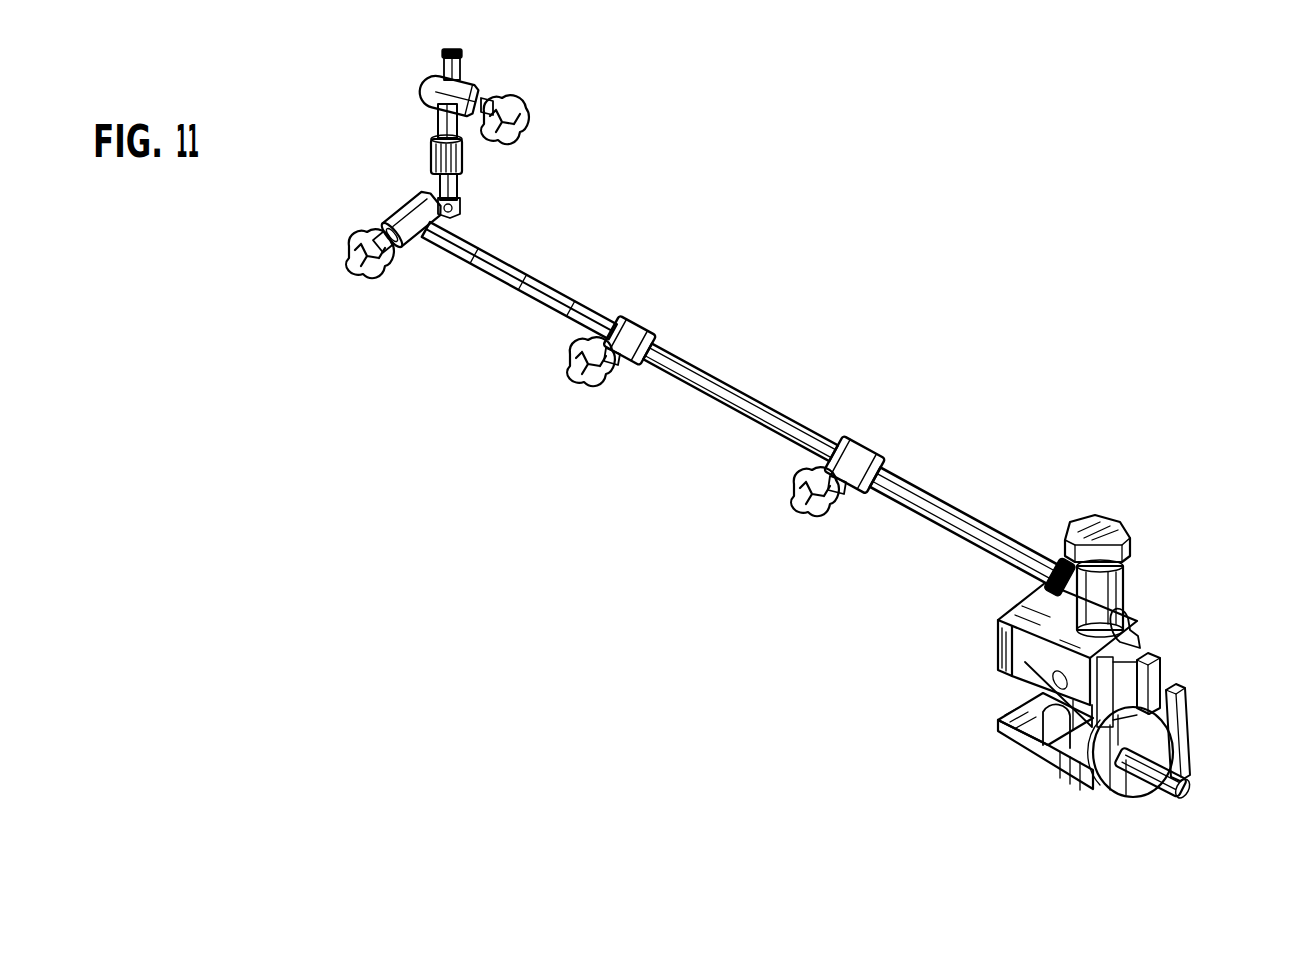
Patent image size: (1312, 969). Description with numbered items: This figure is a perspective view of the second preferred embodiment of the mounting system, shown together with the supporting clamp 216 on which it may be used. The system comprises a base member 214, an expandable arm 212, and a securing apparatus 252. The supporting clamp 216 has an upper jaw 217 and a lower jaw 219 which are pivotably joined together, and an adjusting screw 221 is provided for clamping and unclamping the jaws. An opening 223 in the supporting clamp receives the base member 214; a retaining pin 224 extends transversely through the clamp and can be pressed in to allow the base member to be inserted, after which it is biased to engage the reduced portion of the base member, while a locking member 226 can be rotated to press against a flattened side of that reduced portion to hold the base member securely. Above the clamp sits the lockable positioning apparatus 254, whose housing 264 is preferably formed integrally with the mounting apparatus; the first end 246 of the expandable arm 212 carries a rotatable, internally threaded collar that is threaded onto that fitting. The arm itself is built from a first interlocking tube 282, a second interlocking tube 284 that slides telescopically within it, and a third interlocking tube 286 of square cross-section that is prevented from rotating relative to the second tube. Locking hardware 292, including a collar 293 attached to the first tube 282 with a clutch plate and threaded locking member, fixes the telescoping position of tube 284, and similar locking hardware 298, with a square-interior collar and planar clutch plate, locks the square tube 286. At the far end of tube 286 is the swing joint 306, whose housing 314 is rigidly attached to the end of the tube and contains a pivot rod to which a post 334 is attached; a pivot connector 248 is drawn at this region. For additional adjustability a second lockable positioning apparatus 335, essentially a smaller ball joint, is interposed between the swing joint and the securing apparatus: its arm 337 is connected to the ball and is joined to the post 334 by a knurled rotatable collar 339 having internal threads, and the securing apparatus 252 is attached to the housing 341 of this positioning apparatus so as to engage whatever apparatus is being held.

The expandable arm 212 is at (848, 365).
The base member 214 is at (1180, 624).
The supporting clamp 216 is at (1085, 681).
The upper jaw 217 is at (1016, 644).
The lower jaw 219 is at (1064, 760).
The adjusting screw 221 is at (1152, 807).
The opening 223 is at (1027, 665).
The retaining pin 224 is at (1172, 677).
The locking member 226 is at (1228, 720).
The first end 246 is at (999, 581).
The pivot connector 248 is at (395, 263).
The securing apparatus 252 is at (497, 47).
The lockable positioning apparatus 254 is at (1141, 529).
The housing 264 is at (1156, 598).
The first interlocking tube 282 is at (966, 518).
The second interlocking tube 284 is at (739, 402).
The third interlocking tube 286 is at (546, 280).
The locking hardware 292 is at (831, 530).
The collar 293 is at (892, 439).
The locking hardware 298 is at (604, 395).
The swing joint 306 is at (442, 176).
The housing 314 is at (504, 226).
The post 334 is at (510, 195).
The second lockable positioning apparatus 335 is at (404, 82).
The arm 337 is at (385, 112).
The rotatable collar 339 is at (503, 157).
The housing 341 is at (534, 98).